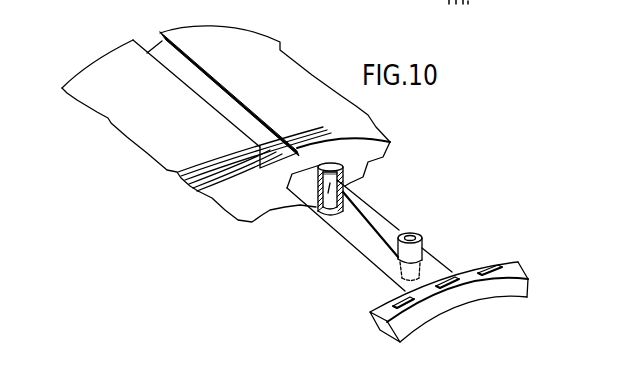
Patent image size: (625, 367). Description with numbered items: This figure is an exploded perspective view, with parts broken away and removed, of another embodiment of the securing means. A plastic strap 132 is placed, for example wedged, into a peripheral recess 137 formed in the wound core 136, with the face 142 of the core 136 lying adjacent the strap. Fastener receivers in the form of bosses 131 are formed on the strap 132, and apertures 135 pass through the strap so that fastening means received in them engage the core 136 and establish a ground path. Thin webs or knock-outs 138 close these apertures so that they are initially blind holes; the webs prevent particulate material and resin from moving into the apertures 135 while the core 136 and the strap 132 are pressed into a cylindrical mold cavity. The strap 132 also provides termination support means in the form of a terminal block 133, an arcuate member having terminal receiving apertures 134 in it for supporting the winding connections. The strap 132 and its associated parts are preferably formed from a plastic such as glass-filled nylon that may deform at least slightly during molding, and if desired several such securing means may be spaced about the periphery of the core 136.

The bosses 131 is at (344, 181).
The plastic strap 132 is at (380, 214).
The terminal block 133 is at (522, 286).
The slot 134 is at (400, 293).
The apertures 135 is at (322, 199).
The core 136 is at (362, 116).
The peripheral recess 137 is at (214, 92).
The thin webs or knock-outs 138 is at (342, 167).
The face 142 is at (235, 198).